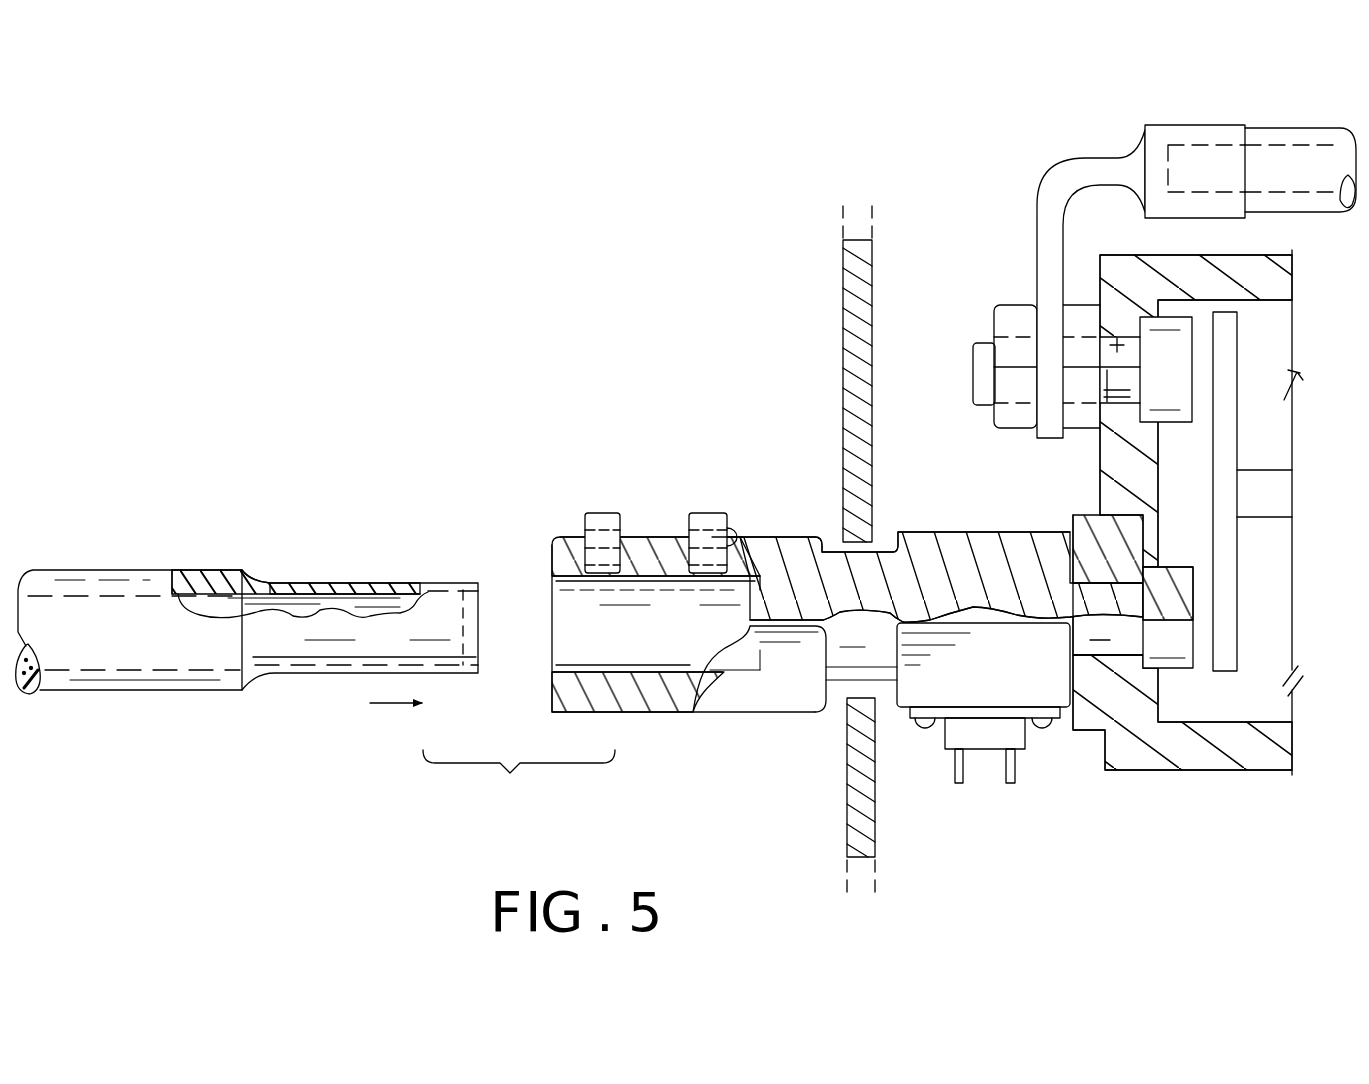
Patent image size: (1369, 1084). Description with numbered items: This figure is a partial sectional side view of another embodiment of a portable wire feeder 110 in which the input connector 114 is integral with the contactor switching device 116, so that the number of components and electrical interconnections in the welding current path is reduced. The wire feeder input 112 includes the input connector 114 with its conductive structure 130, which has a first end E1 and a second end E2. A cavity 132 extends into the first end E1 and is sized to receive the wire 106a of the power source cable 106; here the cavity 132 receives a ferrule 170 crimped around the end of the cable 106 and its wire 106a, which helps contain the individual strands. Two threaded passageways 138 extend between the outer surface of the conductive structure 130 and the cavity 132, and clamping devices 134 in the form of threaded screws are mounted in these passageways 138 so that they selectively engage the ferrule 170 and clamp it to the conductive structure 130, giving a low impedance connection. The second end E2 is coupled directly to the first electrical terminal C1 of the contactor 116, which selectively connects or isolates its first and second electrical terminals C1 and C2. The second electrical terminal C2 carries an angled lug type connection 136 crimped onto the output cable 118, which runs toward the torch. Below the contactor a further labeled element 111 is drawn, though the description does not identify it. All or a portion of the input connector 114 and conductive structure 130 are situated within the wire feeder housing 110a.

The power source cable 106 is at (92, 570).
The wire 106a is at (320, 602).
The ferrule 170 is at (405, 578).
The cavity 132 is at (590, 665).
The conductive structure 130 is at (722, 712).
The clamping devices 134 is at (597, 515).
The threaded passageways 138 is at (722, 531).
The input connector 114 is at (709, 724).
The portable wire feeder 110 is at (836, 265).
The wire feeder input 112 is at (896, 344).
The wire feeder housing 110a is at (848, 407).
The contactor switching device 116 is at (1093, 279).
The sensor 111 is at (1020, 745).
The angled lug type connection 136 is at (1180, 127).
The output cable 118 is at (1302, 128).
The first end E1 is at (625, 712).
The second end E2 is at (1047, 530).
The first electrical terminal C1 is at (1177, 660).
The second electrical terminal C2 is at (1178, 360).